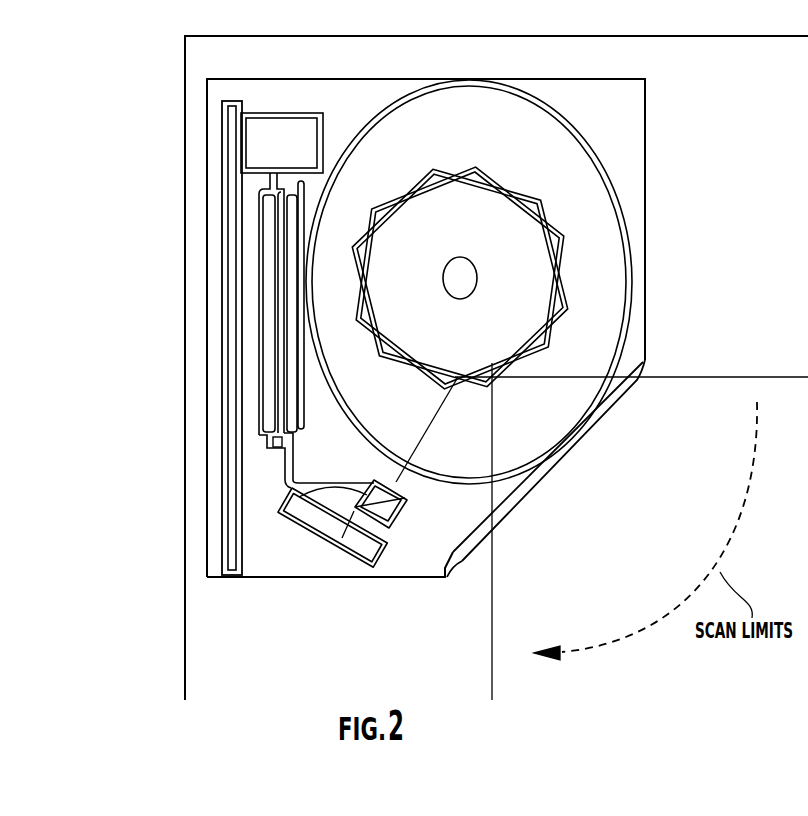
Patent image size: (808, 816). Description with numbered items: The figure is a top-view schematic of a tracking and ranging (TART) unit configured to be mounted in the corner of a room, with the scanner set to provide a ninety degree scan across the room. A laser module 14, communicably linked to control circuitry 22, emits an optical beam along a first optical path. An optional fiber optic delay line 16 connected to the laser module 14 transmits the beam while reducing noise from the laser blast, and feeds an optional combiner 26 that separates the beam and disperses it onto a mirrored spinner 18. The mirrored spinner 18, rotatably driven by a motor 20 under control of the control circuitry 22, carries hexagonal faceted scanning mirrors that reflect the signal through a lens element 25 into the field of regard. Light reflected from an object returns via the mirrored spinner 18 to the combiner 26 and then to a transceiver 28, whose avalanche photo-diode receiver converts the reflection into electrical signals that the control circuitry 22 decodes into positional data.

The laser module 14 is at (263, 131).
The fiber optic delay line 16 is at (256, 217).
The mirrored spinner 18 is at (503, 229).
The motor 20 is at (636, 232).
The control circuitry 22 is at (216, 353).
The lens element 25 is at (569, 467).
The combiner 26 is at (357, 501).
The transceiver 28 is at (311, 548).